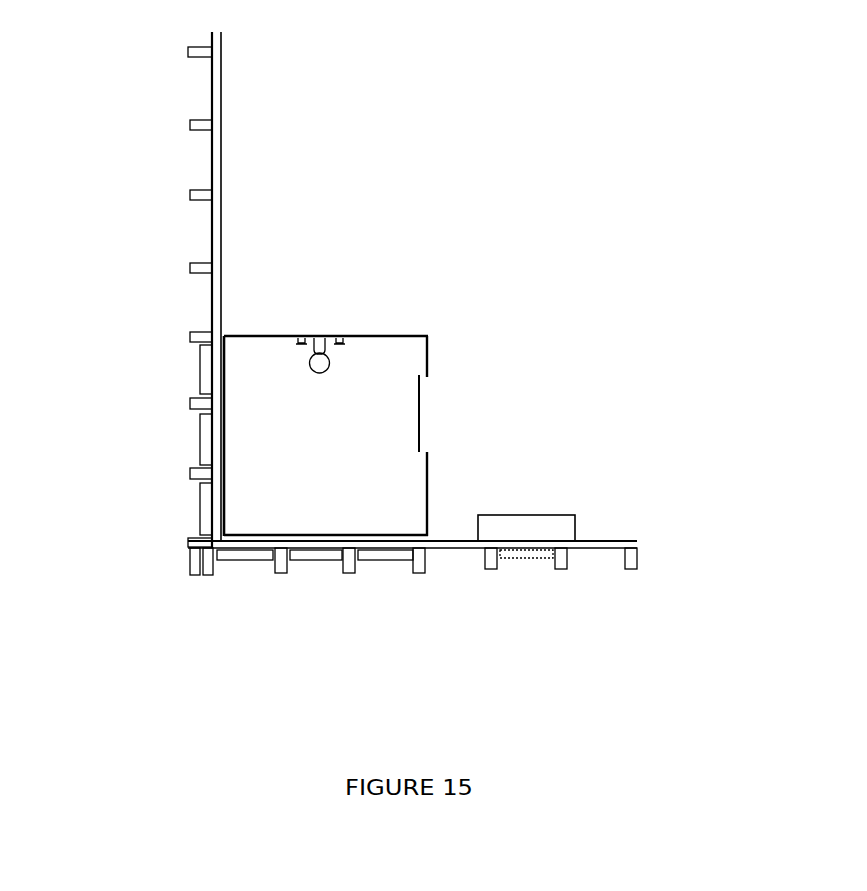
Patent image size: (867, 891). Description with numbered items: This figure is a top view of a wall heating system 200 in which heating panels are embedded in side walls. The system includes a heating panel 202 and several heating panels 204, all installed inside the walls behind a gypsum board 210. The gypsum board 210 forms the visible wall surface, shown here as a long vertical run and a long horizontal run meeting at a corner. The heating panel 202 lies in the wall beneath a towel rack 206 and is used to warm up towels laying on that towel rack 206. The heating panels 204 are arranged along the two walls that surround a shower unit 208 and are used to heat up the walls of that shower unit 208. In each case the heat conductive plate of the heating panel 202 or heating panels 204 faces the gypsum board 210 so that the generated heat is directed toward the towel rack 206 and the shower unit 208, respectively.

The wall heating system 200 is at (583, 133).
The heating panel 202 is at (512, 547).
The heating panels 204 is at (202, 362).
The towel rack 206 is at (520, 518).
The shower unit 208 is at (387, 359).
The gypsum board 210 is at (212, 97).